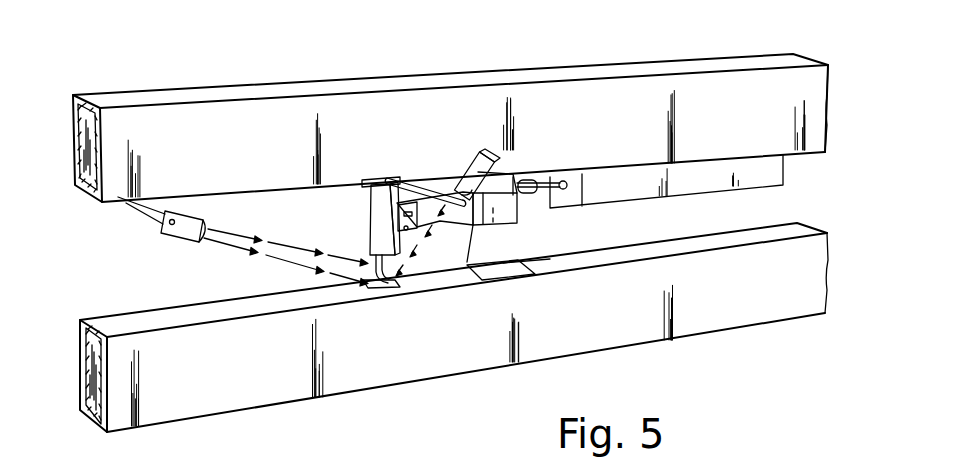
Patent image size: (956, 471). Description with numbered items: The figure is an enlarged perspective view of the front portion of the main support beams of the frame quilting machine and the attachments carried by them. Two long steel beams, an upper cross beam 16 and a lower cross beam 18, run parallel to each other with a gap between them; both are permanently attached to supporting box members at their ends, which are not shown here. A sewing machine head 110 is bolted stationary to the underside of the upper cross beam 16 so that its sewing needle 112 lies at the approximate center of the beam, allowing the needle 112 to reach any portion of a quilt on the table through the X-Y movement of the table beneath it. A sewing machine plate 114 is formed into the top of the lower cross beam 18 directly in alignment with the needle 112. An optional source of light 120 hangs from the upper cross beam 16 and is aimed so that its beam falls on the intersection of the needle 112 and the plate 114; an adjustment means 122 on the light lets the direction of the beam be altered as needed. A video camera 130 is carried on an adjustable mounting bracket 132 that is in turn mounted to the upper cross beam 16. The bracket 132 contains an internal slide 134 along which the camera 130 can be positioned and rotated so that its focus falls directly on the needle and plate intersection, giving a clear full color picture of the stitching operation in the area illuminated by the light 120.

The upper cross beam 16 is at (340, 103).
The lower cross beam 18 is at (773, 300).
The sewing machine head 110 is at (358, 220).
The sewing needle 112 is at (368, 295).
The sewing machine plate 114 is at (403, 295).
The source of light 120 is at (195, 212).
The adjustment means 122 is at (160, 223).
The video camera 130 is at (468, 260).
The adjustable mounting bracket 132 is at (413, 179).
The internal slide 134 is at (440, 183).